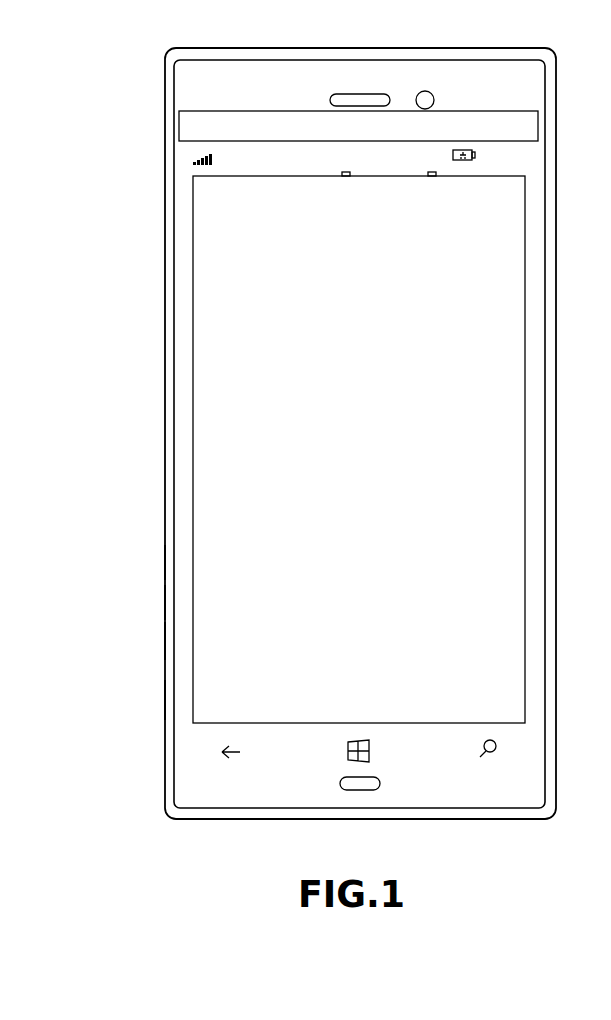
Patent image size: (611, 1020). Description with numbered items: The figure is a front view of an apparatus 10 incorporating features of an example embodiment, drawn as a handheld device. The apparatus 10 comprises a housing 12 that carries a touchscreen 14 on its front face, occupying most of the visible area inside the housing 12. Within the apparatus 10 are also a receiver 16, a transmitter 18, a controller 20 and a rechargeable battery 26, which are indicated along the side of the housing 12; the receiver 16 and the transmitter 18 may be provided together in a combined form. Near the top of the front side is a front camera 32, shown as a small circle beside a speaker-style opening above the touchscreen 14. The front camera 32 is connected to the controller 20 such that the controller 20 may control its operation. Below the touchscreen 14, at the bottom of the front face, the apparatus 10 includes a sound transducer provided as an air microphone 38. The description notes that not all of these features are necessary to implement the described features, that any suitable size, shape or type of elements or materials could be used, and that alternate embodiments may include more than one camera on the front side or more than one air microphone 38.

The apparatus 10 is at (125, 125).
The housing 12 is at (165, 368).
The touchscreen 14 is at (230, 506).
The receiver 16 is at (162, 557).
The transmitter 18 is at (162, 594).
The controller 20 is at (162, 631).
The rechargeable battery 26 is at (162, 695).
The front camera 32 is at (428, 97).
The air microphone 38 is at (361, 791).